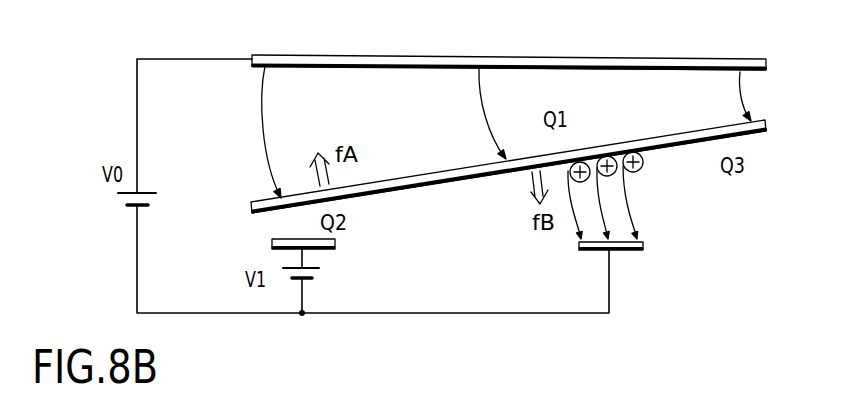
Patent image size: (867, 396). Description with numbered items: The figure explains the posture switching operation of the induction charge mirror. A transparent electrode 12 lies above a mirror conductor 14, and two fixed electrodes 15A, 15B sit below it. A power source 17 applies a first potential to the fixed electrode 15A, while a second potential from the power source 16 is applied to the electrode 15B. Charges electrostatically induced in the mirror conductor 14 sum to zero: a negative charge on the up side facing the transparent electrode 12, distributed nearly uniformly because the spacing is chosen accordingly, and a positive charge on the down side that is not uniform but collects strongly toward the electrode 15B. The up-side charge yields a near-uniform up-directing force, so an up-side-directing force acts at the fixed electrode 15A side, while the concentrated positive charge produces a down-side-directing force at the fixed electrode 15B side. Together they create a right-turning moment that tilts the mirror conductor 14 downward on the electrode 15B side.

The transparent electrode 12 is at (714, 58).
The mirror conductor 14 is at (767, 126).
The fixed electrode 15A is at (335, 243).
The fixed electrode 15B is at (643, 250).
The power source 16 is at (118, 202).
The power source 17 is at (320, 277).